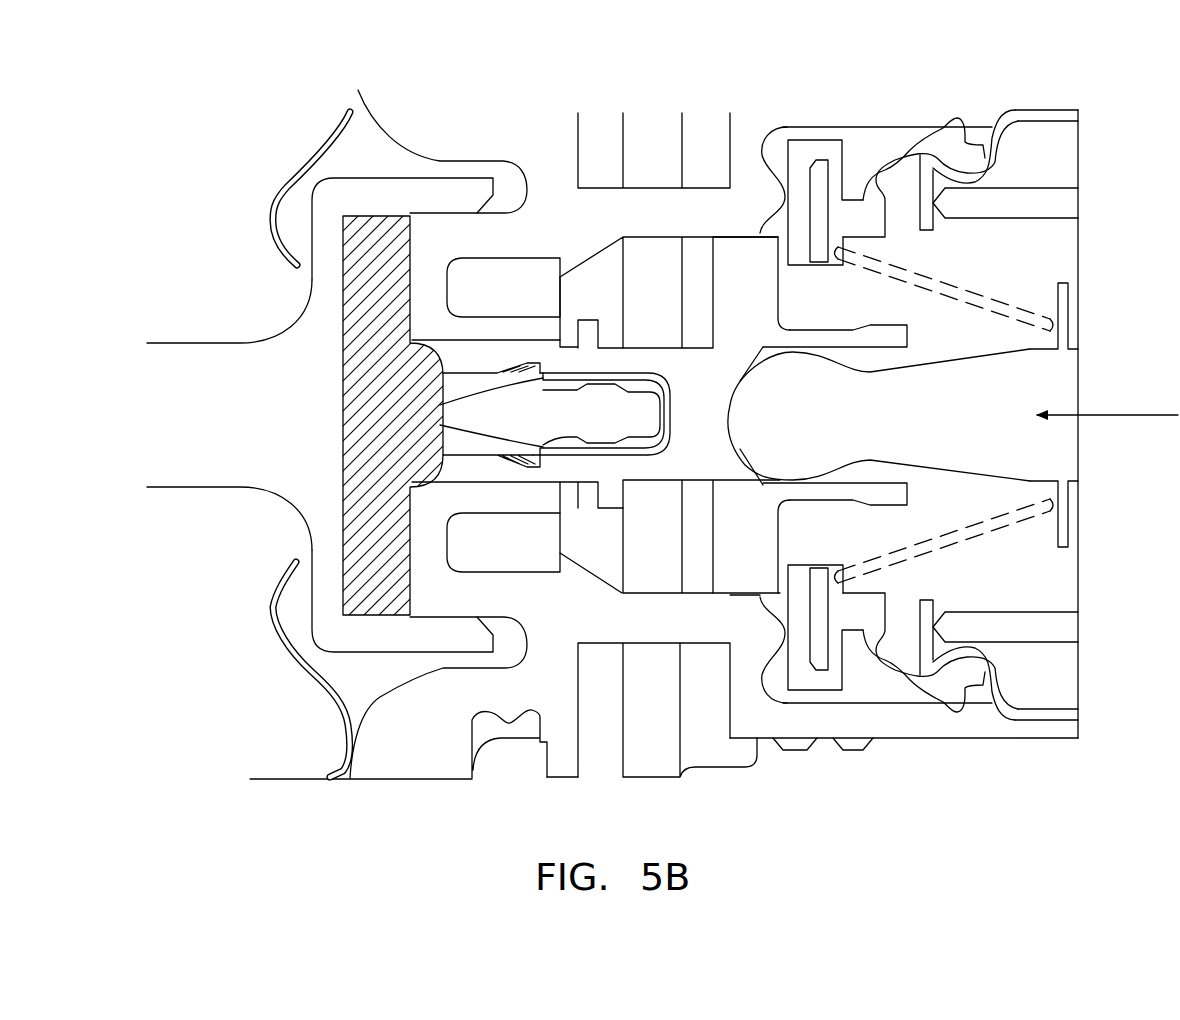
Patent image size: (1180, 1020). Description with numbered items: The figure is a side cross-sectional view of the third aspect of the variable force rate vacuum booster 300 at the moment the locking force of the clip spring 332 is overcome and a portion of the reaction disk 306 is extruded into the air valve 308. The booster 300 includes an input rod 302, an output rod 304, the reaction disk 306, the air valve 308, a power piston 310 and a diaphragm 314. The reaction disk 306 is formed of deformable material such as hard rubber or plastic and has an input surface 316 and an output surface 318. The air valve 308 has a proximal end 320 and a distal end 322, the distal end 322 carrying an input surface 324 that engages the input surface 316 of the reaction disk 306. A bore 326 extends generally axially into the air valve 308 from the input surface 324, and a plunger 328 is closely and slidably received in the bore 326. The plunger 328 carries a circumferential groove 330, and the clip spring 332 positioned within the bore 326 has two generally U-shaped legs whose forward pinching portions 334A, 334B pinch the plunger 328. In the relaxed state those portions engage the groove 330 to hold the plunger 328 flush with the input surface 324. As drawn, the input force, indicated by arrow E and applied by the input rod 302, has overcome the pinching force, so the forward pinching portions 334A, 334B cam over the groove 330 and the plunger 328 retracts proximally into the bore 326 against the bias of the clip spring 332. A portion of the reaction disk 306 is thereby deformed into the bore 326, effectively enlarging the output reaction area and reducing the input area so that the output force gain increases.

The variable force rate vacuum booster 300 is at (922, 96).
The input rod 302 is at (1078, 379).
The output rod 304 is at (160, 468).
The reaction disk 306 is at (347, 350).
The air valve 308 is at (713, 384).
The power piston 310 is at (557, 216).
The diaphragm 314 is at (295, 180).
The input surface 316 is at (410, 242).
The output surface 318 is at (340, 468).
The proximal end 320 is at (722, 366).
The distal end 322 is at (463, 367).
The input surface 324 is at (333, 512).
The bore 326 is at (466, 447).
The plunger 328 is at (590, 428).
The circumferential groove 330 is at (545, 398).
The clip spring 332 is at (640, 348).
The forward pinching portion 334A is at (440, 405).
The forward pinching portion 334B is at (440, 425).
The input force E is at (1110, 432).